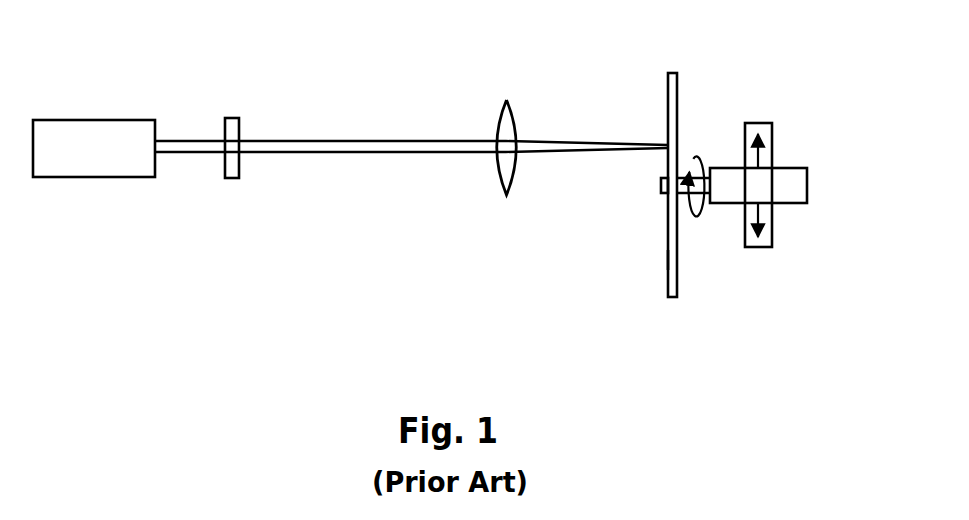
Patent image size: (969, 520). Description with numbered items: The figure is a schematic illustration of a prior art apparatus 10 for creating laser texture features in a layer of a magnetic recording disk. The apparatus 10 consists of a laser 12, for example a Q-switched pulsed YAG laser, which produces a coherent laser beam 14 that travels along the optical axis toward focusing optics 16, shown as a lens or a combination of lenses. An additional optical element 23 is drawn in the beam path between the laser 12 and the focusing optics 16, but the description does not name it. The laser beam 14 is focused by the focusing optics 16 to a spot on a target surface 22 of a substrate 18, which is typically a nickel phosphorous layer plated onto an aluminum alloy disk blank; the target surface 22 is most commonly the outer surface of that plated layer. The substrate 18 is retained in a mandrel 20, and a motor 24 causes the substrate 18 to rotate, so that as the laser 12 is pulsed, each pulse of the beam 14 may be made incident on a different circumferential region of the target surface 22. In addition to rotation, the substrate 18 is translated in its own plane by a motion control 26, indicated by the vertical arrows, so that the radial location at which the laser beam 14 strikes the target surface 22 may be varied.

The apparatus 10 is at (513, 45).
The laser 12 is at (102, 177).
The laser beam 14 is at (302, 141).
The focusing optics 16 is at (498, 180).
The substrate 18 is at (670, 297).
The mandrel 20 is at (661, 187).
The target surface 22 is at (668, 258).
The optical element 23 is at (235, 178).
The motor 24 is at (807, 185).
The motion control 26 is at (773, 140).